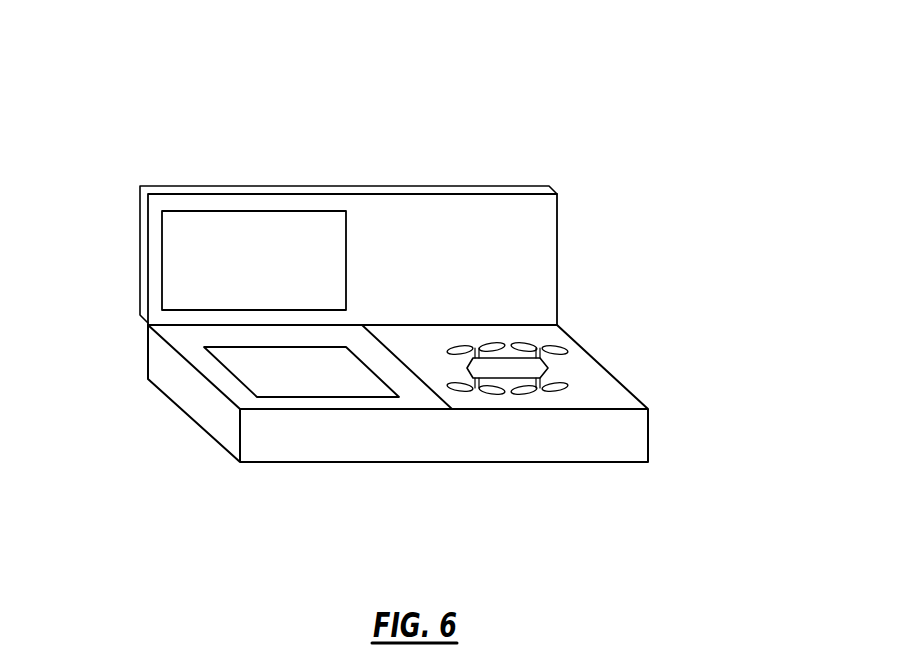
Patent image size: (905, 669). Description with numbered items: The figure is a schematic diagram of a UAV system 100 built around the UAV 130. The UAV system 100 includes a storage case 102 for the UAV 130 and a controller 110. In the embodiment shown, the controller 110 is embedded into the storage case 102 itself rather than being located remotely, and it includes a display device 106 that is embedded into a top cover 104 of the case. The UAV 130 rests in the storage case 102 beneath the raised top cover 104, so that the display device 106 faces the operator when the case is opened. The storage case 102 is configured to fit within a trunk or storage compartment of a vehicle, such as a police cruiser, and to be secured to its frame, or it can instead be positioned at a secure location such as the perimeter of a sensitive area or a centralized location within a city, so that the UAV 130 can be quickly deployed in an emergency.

The UAV system 100 is at (507, 82).
The storage case 102 is at (635, 435).
The top cover 104 is at (523, 226).
The display device 106 is at (267, 223).
The controller 110 is at (168, 389).
The UAV 130 is at (513, 370).